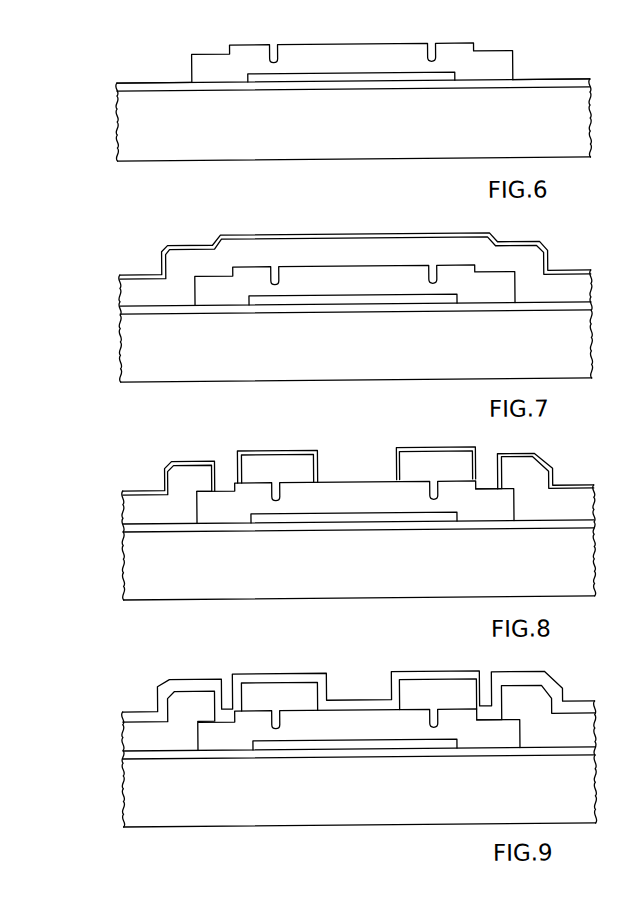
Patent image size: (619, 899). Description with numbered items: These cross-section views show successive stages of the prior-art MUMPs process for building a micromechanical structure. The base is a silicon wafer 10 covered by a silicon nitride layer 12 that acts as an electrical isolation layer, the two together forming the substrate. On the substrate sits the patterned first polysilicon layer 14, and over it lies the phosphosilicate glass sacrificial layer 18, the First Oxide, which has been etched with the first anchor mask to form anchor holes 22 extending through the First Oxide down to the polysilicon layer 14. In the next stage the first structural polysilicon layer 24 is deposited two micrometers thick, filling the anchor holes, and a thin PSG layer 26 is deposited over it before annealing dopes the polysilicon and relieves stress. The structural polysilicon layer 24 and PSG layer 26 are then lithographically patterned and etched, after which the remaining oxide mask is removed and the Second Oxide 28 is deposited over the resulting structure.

In FIG. 6, the silicon wafer 10 is at (117, 134).
In FIG. 7, the silicon wafer 10 is at (120, 357).
In FIG. 8, the silicon wafer 10 is at (123, 574).
In FIG. 9, the silicon wafer 10 is at (123, 804).
In FIG. 6, the silicon nitride layer 12 is at (117, 88).
In FIG. 7, the silicon nitride layer 12 is at (120, 310).
In FIG. 8, the silicon nitride layer 12 is at (123, 522).
In FIG. 9, the silicon nitride layer 12 is at (123, 752).
In FIG. 6, the POLY 0 layer 14 is at (352, 72).
In FIG. 7, the POLY 0 layer 14 is at (322, 295).
In FIG. 8, the POLY 0 layer 14 is at (368, 513).
In FIG. 9, the POLY 0 layer 14 is at (367, 740).
In FIG. 6, the sacrificial layer 18 is at (218, 53).
In FIG. 7, the sacrificial layer 18 is at (252, 266).
In FIG. 8, the sacrificial layer 18 is at (300, 482).
In FIG. 9, the sacrificial layer 18 is at (300, 710).
In FIG. 6, the anchor holes 22 is at (150, 66).
In FIG. 7, the POLY 1 layer 24 is at (120, 290).
In FIG. 8, the POLY 1 layer 24 is at (123, 506).
In FIG. 9, the POLY 1 layer 24 is at (123, 734).
In FIG. 7, the PSG layer 26 is at (162, 250).
In FIG. 8, the PSG layer 26 is at (165, 466).
In FIG. 9, the Second Oxide 28 is at (165, 680).